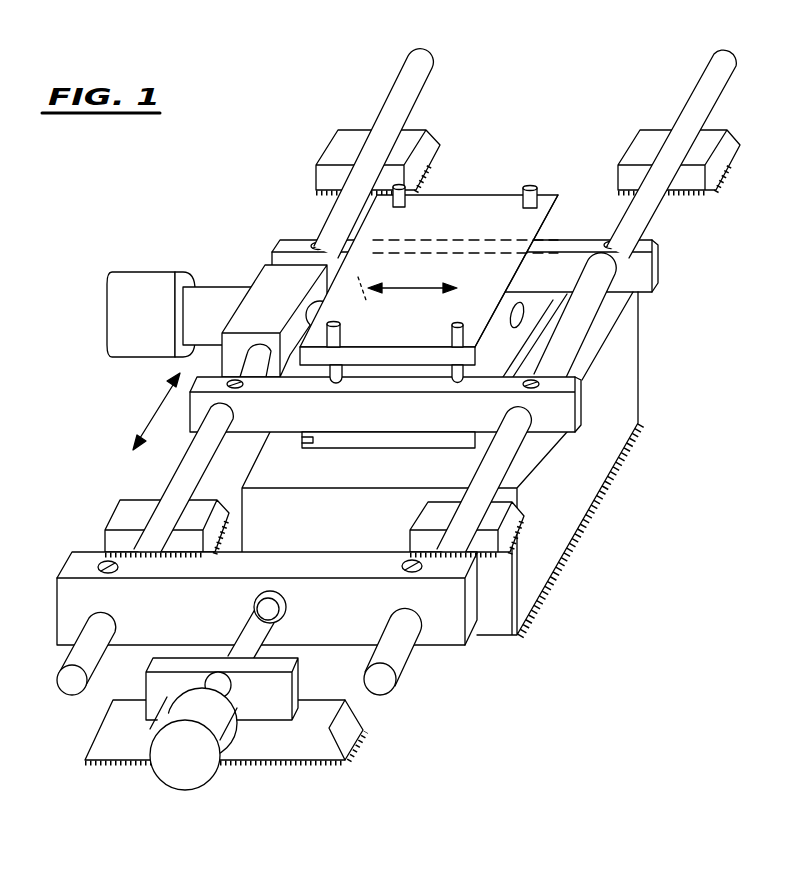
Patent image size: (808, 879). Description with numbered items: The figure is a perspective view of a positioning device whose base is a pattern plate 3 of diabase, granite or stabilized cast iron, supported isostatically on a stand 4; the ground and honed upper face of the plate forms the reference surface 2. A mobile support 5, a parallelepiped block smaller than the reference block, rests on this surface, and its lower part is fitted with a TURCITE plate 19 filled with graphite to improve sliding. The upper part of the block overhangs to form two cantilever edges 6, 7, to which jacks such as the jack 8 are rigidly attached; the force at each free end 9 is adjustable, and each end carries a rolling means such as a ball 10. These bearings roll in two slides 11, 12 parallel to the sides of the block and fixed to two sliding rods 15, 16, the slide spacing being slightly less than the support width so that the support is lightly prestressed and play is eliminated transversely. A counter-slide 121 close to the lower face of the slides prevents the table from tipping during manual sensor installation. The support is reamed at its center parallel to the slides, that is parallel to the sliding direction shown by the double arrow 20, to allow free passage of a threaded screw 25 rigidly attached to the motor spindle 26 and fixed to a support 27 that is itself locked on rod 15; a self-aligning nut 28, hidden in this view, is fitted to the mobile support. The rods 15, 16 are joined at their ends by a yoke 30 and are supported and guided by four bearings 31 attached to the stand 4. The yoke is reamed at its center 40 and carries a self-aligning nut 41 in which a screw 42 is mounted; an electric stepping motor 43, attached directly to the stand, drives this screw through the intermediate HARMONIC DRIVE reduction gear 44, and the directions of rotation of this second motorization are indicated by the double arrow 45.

The reference surface 2 is at (595, 335).
The pattern plate 3 is at (572, 492).
The stand 4 is at (547, 597).
The mobile support 5 is at (475, 213).
The cantilever edge 6 is at (558, 200).
The cantilever edge 7 is at (480, 347).
The jack 8 is at (525, 185).
The free end 9 is at (465, 380).
The ball 10 is at (330, 383).
The slide 11 is at (653, 260).
The slide 12 is at (580, 393).
The sliding rod 15 is at (390, 105).
The sliding rod 16 is at (712, 93).
The TURCITE plate 19 is at (565, 315).
The double arrow 20 is at (415, 268).
The threaded screw 25 is at (303, 303).
The motor spindle 26 is at (120, 302).
The support 27 is at (263, 283).
The self-aligning nut 28 is at (358, 277).
The yoke 30 is at (477, 607).
The bearing 31 is at (512, 525).
The center 40 is at (290, 613).
The self-aligning nut 41 is at (260, 587).
The screw 42 is at (263, 630).
The electric stepping motor 43 is at (160, 775).
The HARMONIC DRIVE reduction gear 44 is at (227, 690).
The double arrow 45 is at (153, 403).
The counter-slide 121 is at (320, 437).